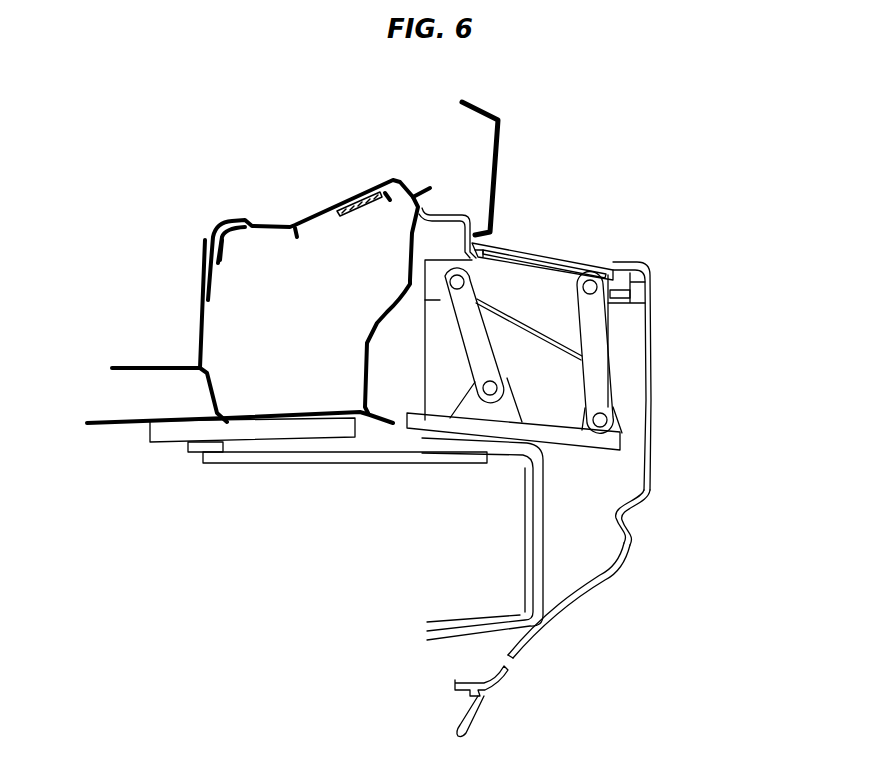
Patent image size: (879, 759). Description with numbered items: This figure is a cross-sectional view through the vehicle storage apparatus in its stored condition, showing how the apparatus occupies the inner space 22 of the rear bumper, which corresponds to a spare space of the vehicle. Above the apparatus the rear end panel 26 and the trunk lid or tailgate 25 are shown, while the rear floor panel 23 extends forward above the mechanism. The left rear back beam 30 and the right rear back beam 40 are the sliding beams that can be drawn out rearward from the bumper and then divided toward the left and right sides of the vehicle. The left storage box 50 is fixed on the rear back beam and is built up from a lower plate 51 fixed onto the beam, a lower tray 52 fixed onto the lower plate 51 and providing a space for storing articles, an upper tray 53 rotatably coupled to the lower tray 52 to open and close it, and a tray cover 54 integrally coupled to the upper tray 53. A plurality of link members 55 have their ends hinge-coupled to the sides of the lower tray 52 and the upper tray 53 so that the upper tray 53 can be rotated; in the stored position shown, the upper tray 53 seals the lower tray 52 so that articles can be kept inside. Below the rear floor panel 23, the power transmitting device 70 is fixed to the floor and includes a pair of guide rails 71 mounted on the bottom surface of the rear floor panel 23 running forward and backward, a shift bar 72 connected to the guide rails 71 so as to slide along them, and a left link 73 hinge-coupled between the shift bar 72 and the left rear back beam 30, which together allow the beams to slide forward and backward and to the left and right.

The inner space 22 is at (590, 552).
The rear floor panel 23 is at (107, 422).
The trunk lid or tailgate 25 is at (497, 113).
The rear end panel 26 is at (387, 312).
The left rear back beam 30 is at (540, 527).
The right rear back beam 40 is at (525, 557).
The left storage box 50 is at (622, 367).
The lower plate 51 is at (607, 445).
The lower tray 52 is at (547, 387).
The upper tray 53 is at (510, 280).
The tray cover 54 is at (648, 317).
The link member 55 is at (480, 340).
The power transmitting device 70 is at (238, 493).
The guide rail 71 is at (150, 430).
The shift bar 72 is at (187, 447).
The left link 73 is at (297, 460).